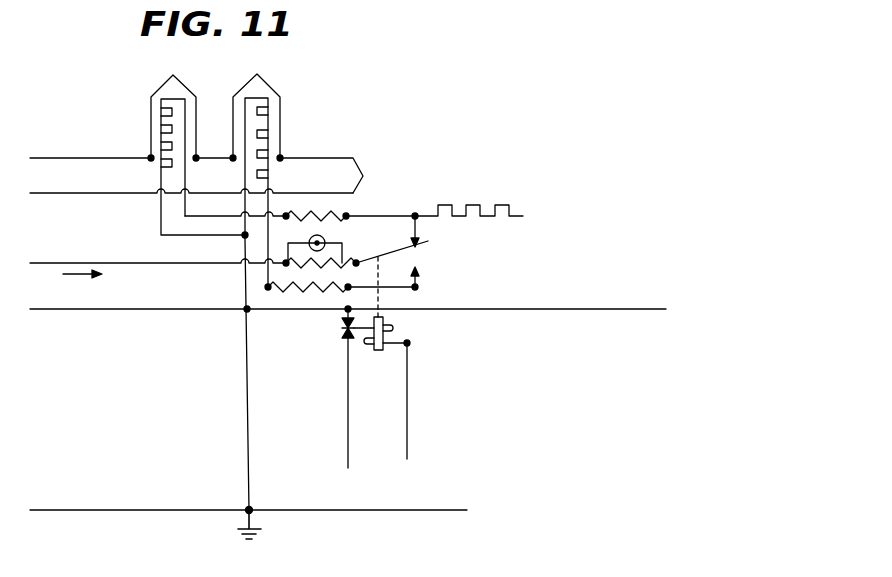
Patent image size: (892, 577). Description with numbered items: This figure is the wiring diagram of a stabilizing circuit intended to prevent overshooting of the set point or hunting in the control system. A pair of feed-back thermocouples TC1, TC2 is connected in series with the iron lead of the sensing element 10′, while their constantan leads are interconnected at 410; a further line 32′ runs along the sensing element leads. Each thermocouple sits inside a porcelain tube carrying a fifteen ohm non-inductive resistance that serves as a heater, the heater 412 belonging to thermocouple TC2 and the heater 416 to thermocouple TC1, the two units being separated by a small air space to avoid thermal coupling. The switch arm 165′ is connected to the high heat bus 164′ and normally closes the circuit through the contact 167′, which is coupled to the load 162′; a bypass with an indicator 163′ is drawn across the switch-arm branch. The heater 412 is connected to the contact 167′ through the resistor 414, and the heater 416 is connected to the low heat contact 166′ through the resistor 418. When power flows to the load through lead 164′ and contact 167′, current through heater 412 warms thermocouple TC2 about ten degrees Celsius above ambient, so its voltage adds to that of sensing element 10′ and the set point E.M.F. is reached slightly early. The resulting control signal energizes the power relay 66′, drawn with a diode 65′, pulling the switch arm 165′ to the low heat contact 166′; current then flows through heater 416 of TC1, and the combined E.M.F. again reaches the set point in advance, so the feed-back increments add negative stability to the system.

The sensing element 10′ is at (365, 165).
The common line 32′ is at (53, 194).
The high heat bus 164′ is at (140, 264).
The feed-back thermocouple TC1 is at (256, 106).
The feed-back thermocouple TC2 is at (173, 106).
The interconnection of constantan leads 410 is at (215, 157).
The heater 412 is at (162, 128).
The heater 416 is at (270, 128).
The resistor 414 is at (348, 215).
The load 162′ is at (498, 205).
The indicator lamp 163′ is at (323, 236).
The switch arm 165′ is at (430, 248).
The low heat contact 166′ is at (418, 270).
The contact 167′ is at (420, 236).
The resistor 418 is at (292, 288).
The diode 65′ is at (343, 330).
The power relay 66′ is at (378, 350).